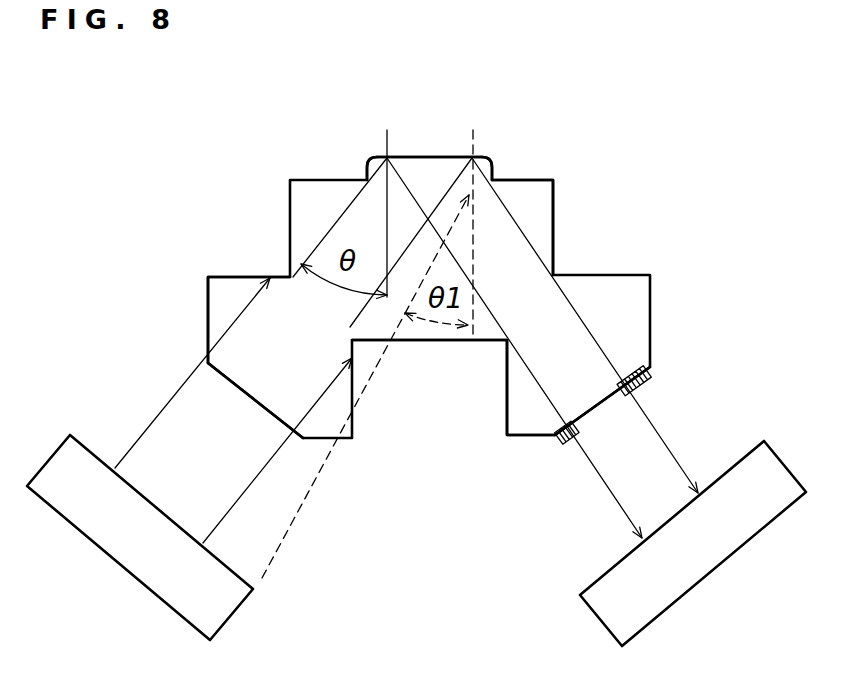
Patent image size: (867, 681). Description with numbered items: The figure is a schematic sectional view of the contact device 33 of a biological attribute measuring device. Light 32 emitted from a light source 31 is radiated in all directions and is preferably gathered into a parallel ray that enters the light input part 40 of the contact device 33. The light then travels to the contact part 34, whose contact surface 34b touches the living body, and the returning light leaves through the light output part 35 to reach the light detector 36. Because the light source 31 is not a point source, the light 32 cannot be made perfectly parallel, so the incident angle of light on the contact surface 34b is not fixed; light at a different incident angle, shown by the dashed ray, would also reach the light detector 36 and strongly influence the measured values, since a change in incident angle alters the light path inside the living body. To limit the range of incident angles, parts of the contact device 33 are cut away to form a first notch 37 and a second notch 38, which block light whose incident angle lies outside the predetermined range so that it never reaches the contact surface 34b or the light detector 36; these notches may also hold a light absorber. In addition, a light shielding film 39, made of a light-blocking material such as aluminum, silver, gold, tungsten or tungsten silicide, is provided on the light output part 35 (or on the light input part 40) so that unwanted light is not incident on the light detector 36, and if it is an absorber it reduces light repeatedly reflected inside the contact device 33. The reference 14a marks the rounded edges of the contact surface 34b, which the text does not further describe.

The rounded corner edge of prism top surface 14a is at (367, 160).
The light source 31 is at (140, 581).
The light 32 is at (291, 525).
The contact device 33 is at (533, 208).
The contact part 34 is at (433, 173).
The contact surface 34b is at (410, 155).
The light output part 35 is at (602, 403).
The light detector 36 is at (698, 580).
The first notch 37 is at (275, 263).
The second notch 38 is at (497, 350).
The light shielding film 39 is at (655, 366).
The light input part 40 is at (243, 393).